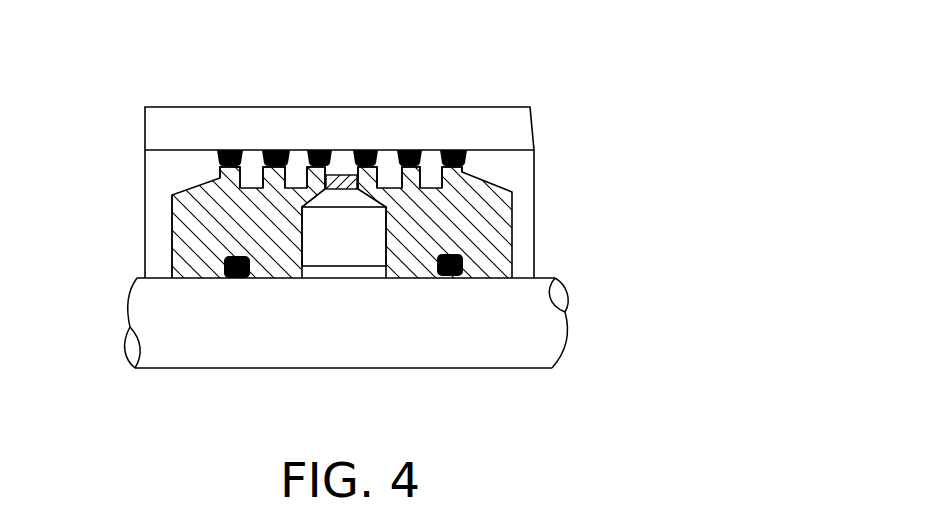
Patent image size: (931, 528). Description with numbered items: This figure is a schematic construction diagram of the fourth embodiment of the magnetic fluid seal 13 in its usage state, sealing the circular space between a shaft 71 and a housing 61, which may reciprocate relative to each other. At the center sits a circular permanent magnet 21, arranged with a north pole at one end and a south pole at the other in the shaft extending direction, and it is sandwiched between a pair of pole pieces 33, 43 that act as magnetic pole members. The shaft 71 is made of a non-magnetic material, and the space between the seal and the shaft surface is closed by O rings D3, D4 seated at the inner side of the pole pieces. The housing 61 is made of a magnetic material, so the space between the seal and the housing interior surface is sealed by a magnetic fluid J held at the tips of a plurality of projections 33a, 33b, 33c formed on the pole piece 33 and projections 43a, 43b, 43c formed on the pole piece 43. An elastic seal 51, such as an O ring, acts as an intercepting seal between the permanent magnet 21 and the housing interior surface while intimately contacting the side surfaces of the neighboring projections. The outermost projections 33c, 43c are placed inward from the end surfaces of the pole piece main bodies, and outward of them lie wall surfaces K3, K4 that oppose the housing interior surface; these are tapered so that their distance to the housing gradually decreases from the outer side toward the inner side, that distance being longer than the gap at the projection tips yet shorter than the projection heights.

The sealing device 13 is at (148, 213).
The permanent magnet 21 is at (340, 253).
The pole piece 33 is at (465, 264).
The projection 33a is at (306, 172).
The projection 33b is at (262, 172).
The projection 33c is at (220, 176).
The pole piece 43 is at (503, 210).
The projection 43a is at (360, 172).
The projection 43b is at (404, 172).
The projection 43c is at (458, 172).
The elastic seal 51 is at (346, 174).
The housing 61 is at (160, 117).
The shaft 71 is at (550, 350).
The O ring D3 is at (237, 280).
The O ring D4 is at (455, 258).
The magnetic fluid J is at (219, 150).
The wall surface K3 is at (182, 178).
The wall surface K4 is at (518, 151).